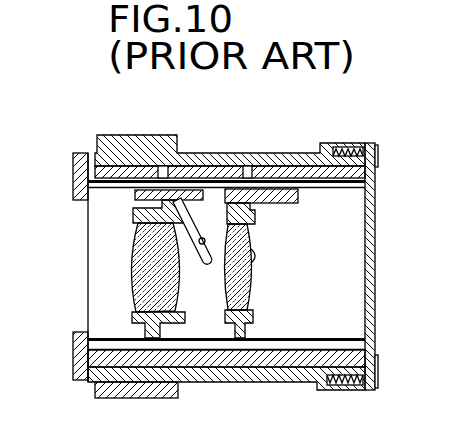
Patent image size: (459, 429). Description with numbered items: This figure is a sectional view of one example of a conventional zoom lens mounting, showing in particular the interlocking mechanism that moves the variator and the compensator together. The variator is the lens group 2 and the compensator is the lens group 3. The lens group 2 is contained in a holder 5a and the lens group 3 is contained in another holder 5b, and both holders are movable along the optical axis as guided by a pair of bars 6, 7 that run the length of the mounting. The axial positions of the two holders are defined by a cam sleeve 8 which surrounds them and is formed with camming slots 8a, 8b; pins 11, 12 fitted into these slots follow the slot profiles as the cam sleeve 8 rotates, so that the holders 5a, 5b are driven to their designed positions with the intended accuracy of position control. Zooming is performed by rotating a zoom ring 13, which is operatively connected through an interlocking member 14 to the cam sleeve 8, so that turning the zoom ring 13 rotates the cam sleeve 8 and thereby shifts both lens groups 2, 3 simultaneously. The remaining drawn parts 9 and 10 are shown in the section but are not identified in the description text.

The lens group 2 is at (141, 267).
The lens group 3 is at (244, 291).
The holder 5a is at (182, 315).
The holder 5b is at (247, 323).
The bar 6 is at (317, 191).
The bar 7 is at (335, 338).
The cam sleeve 8 is at (277, 360).
The camming slot 8a is at (204, 238).
The camming slot 8b is at (253, 258).
The outer rotary barrel 9 is at (292, 160).
The front ring 10 is at (374, 206).
The pin 11 is at (172, 171).
The pin 12 is at (249, 170).
The zoom ring 13 is at (98, 388).
The interlocking member 14 is at (92, 168).